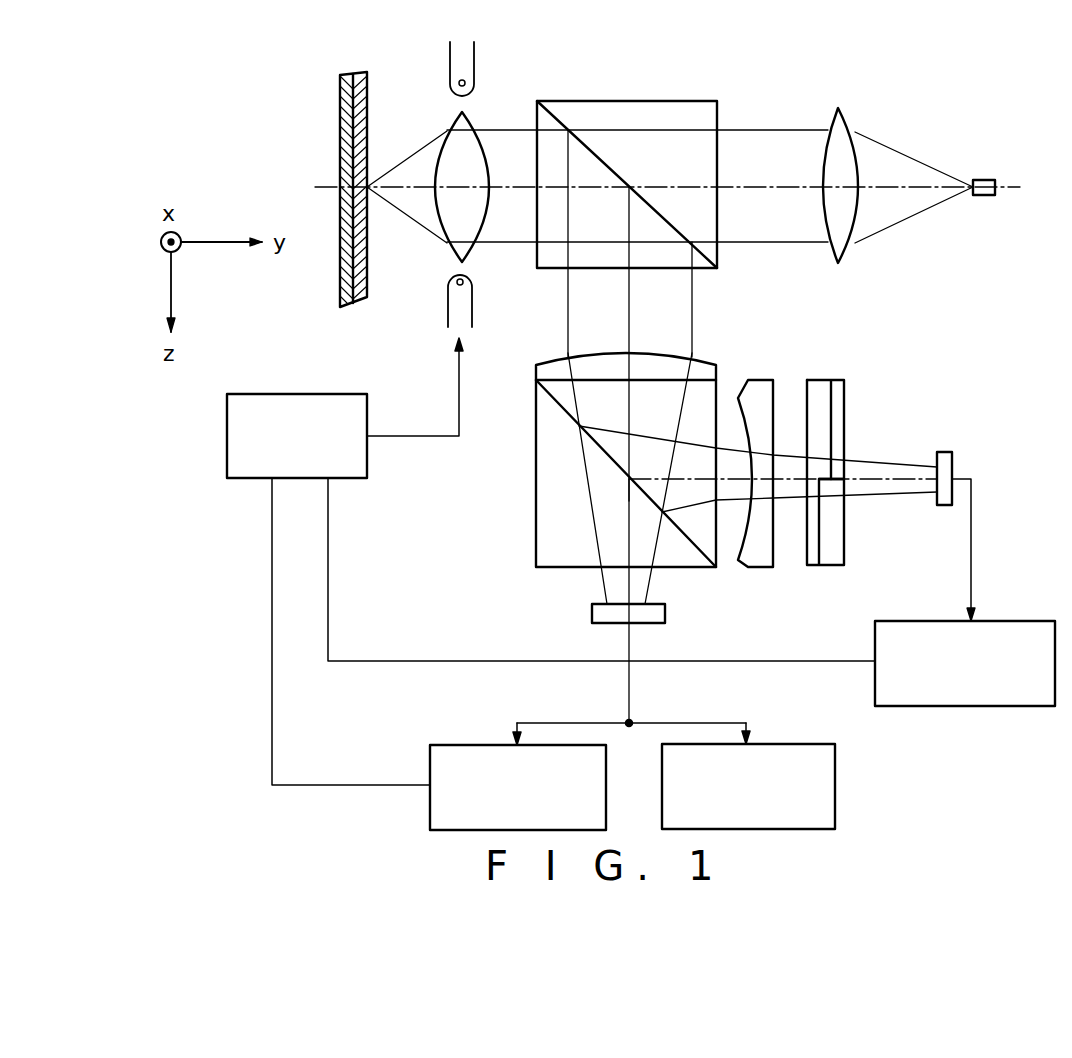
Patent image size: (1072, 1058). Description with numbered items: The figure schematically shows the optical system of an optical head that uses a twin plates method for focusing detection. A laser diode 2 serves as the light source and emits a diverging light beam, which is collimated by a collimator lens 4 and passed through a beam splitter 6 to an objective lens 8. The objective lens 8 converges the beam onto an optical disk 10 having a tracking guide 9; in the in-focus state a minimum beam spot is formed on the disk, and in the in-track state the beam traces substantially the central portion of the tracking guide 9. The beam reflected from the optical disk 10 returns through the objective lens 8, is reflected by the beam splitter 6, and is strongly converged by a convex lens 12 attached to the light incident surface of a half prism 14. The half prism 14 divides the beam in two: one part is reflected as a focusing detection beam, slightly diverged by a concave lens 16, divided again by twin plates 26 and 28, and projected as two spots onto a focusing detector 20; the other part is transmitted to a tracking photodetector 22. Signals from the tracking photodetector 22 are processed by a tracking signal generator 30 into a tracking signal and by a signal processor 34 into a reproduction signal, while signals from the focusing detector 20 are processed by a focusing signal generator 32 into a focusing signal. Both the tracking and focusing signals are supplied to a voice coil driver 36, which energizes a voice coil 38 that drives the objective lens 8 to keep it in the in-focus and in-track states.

The laser diode 2 is at (985, 179).
The collimator lens 4 is at (850, 118).
The beam splitter 6 is at (668, 101).
The objective lens 8 is at (478, 120).
The tracking guide 9 is at (370, 114).
The optical disk 10 is at (334, 105).
The convex lens 12 is at (708, 367).
The half prism 14 is at (536, 468).
The concave lens 16 is at (762, 385).
The focusing detector 20 is at (953, 461).
The tracking photodetector 22 is at (668, 614).
The twin plate 26 is at (846, 386).
The twin plate 28 is at (846, 540).
The tracking signal generator 30 is at (430, 758).
The focusing signal generator 32 is at (1033, 620).
The signal processor 34 is at (836, 790).
The voice coil driver 36 is at (293, 393).
The voice coil 38 is at (448, 304).